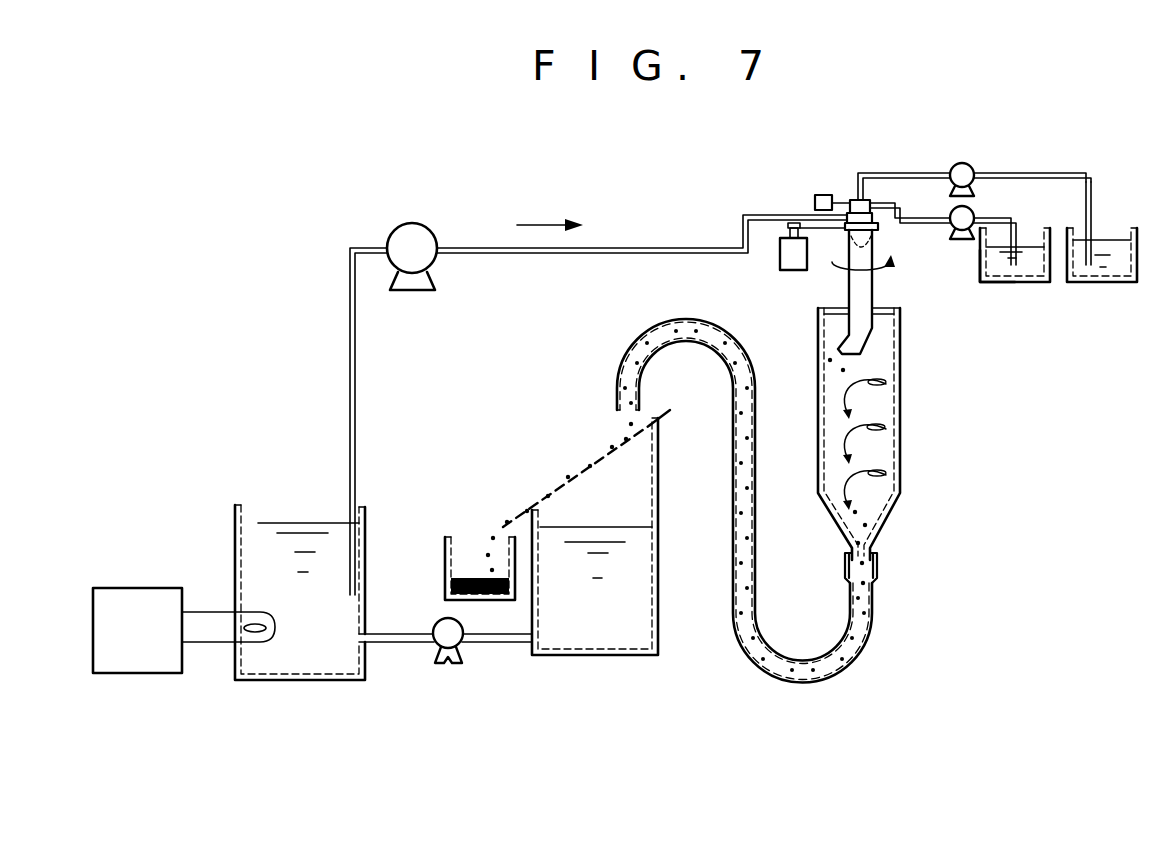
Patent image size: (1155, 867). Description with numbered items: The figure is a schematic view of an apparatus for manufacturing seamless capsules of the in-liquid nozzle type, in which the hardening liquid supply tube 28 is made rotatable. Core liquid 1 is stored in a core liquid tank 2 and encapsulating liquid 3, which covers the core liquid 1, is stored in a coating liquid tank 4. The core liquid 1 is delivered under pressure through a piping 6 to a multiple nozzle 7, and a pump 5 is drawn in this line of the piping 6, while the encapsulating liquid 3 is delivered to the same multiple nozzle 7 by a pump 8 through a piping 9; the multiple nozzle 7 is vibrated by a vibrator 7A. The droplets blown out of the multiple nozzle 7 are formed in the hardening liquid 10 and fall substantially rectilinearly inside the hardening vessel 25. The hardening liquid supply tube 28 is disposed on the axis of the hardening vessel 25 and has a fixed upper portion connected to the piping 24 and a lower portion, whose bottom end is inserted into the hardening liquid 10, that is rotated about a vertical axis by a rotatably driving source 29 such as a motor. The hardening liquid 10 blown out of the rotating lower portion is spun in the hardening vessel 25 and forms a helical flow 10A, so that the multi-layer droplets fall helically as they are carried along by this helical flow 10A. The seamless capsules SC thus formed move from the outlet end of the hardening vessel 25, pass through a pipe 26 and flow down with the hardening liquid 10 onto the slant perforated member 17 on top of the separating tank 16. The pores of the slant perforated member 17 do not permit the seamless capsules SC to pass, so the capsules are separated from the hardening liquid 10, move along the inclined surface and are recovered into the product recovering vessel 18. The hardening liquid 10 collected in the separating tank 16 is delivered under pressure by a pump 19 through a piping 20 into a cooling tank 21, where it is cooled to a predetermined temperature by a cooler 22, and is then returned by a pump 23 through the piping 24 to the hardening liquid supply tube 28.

The core liquid 1 is at (1113, 260).
The core liquid tank 2 is at (1087, 283).
The encapsulating liquid 3 is at (1030, 258).
The coating liquid tank 4 is at (1000, 283).
The pump 5 is at (962, 163).
The piping 6 is at (1043, 172).
The multiple nozzle 7 is at (851, 200).
The vibrator 7A is at (818, 196).
The pump 8 is at (975, 210).
The piping 9 is at (940, 224).
The hardening liquid 10 is at (883, 492).
The helical flow 10A is at (888, 430).
The separating tank 16 is at (640, 656).
The slant perforated member 17 is at (560, 487).
The product recovering vessel 18 is at (445, 556).
The pump 19 is at (451, 665).
The piping 20 is at (507, 643).
The cooling tank 21 is at (358, 681).
The cooler 22 is at (164, 604).
The pump 23 is at (416, 237).
The piping 24 is at (660, 247).
The hardening vessel 25 is at (903, 456).
The pipe 26 is at (856, 668).
The hardening liquid supply tube 28 is at (852, 290).
The rotatably driving source 29 is at (780, 262).
The seamless capsules SC is at (490, 572).